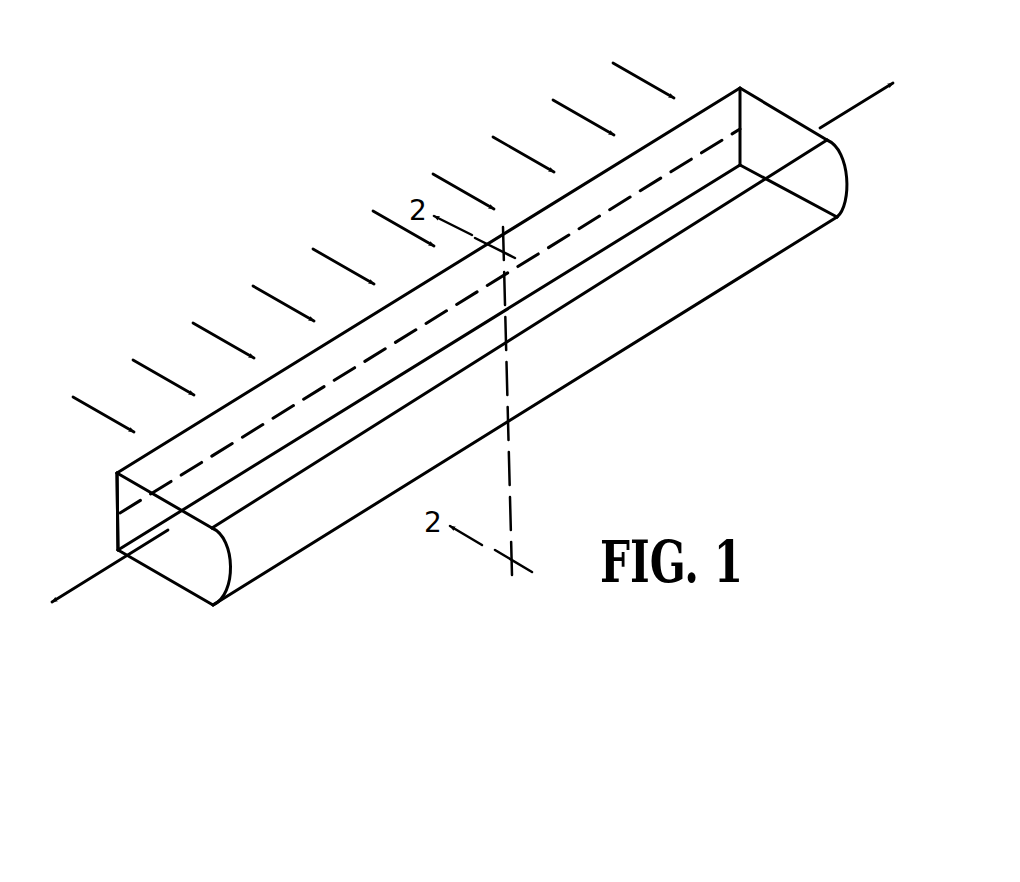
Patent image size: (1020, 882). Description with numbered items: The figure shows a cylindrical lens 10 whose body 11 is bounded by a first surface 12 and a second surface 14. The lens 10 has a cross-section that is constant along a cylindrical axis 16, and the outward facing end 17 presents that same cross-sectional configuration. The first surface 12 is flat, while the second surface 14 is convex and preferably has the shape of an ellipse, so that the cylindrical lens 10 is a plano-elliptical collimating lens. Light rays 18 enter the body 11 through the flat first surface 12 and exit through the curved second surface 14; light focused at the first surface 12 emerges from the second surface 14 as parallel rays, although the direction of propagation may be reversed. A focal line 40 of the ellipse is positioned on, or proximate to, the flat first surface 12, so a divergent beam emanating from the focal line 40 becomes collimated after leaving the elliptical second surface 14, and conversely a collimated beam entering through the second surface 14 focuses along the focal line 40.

The cylindrical lens 10 is at (797, 77).
The body 11 is at (755, 120).
The first surface 12 is at (117, 493).
The second surface 14 is at (277, 542).
The cylindrical axis 16 is at (93, 583).
The outward facing end 17 is at (177, 558).
The light rays 18 is at (65, 398).
The focal line 40 is at (346, 372).